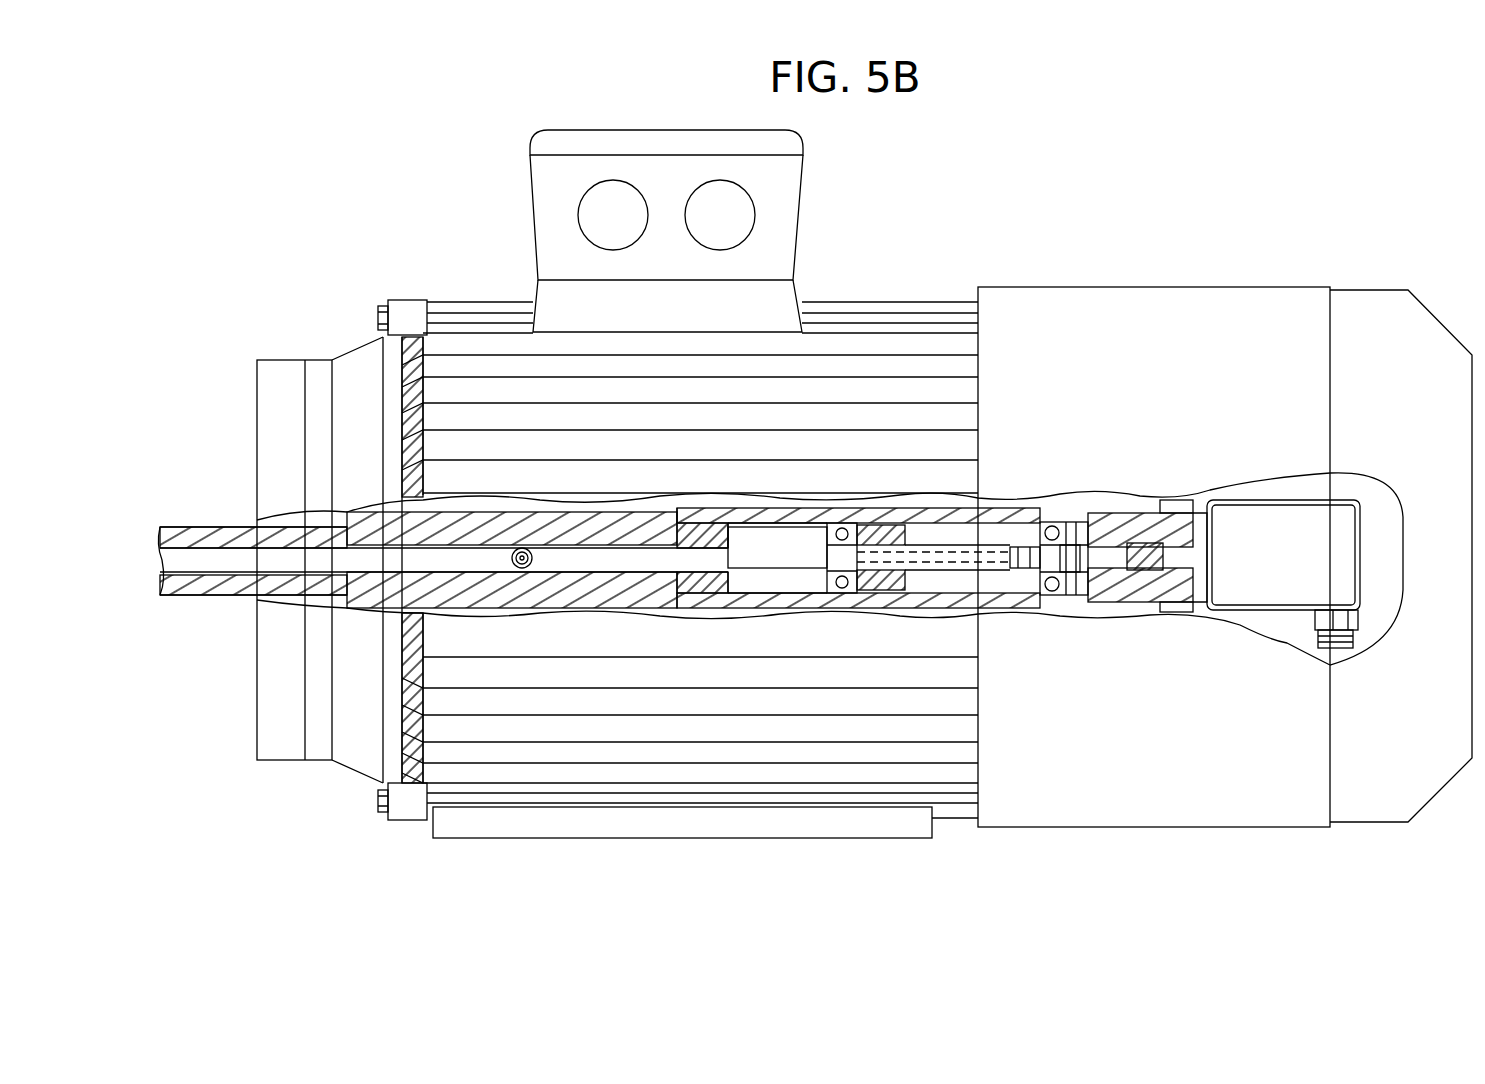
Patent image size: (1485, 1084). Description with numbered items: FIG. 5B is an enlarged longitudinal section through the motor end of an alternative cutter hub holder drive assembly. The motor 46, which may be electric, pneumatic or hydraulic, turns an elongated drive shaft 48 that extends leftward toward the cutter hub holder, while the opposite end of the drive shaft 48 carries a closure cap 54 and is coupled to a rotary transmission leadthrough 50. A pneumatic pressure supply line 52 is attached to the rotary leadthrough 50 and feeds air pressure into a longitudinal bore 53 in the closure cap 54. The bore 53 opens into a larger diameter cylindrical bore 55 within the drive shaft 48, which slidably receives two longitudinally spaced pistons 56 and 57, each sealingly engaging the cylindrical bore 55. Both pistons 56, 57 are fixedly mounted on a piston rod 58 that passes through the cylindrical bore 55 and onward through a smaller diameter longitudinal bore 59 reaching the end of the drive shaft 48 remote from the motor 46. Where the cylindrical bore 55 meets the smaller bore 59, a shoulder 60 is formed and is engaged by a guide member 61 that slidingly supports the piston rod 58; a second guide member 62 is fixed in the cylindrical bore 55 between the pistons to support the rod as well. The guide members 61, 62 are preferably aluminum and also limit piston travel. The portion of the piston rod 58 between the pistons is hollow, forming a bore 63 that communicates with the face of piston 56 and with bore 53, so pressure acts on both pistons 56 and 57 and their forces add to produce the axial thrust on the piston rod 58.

The motor 46 is at (893, 310).
The drive shaft 48 is at (377, 593).
The rotary transmission leadthrough 50 is at (1237, 515).
The pneumatic pressure supply line 52 is at (1335, 648).
The longitudinal bore 53 is at (1118, 572).
The closure cap 54 is at (1140, 520).
The cylindrical bore 55 is at (1010, 515).
The piston 56 is at (1027, 582).
The piston 57 is at (825, 577).
The piston rod 58 is at (223, 560).
The longitudinal bore 59 is at (612, 575).
The shoulder 60 is at (660, 520).
The guide member 61 is at (722, 520).
The second guide member 62 is at (893, 592).
The bore 63 is at (867, 592).